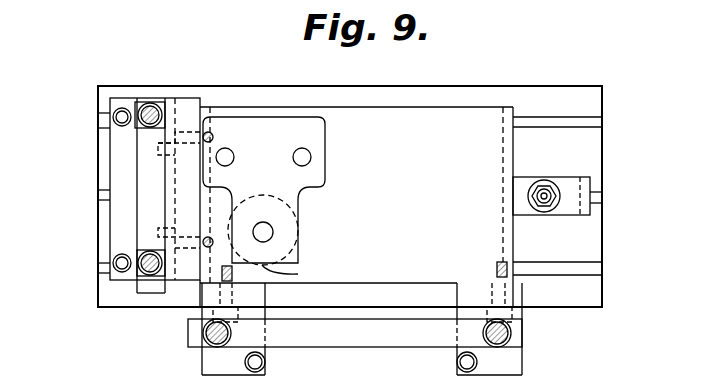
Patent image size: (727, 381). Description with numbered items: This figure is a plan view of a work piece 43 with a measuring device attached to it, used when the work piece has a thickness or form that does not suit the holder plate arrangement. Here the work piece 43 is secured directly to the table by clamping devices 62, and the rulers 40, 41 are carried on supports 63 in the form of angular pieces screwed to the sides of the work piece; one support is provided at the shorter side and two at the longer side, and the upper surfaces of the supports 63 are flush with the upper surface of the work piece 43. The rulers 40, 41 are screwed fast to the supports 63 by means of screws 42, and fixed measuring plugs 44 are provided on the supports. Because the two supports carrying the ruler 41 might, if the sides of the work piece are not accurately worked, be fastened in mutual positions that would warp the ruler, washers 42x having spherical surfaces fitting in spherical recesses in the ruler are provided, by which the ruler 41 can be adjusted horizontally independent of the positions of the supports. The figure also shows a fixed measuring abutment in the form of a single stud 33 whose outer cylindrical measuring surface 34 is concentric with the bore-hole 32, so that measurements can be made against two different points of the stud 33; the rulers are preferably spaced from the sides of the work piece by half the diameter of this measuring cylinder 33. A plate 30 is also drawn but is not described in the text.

The plate 30 is at (319, 151).
The bore-hole 32 is at (272, 231).
The stud 33 is at (300, 233).
The outer cylindrical measuring surface 34 is at (295, 271).
The ruler 40 is at (146, 206).
The ruler 41 is at (373, 345).
The screws 42 is at (148, 130).
The washers 42x is at (542, 330).
The work piece 43 is at (441, 125).
The fixed measuring plugs 44 is at (110, 116).
The clamping devices 62 is at (566, 180).
The supports 63 is at (118, 162).